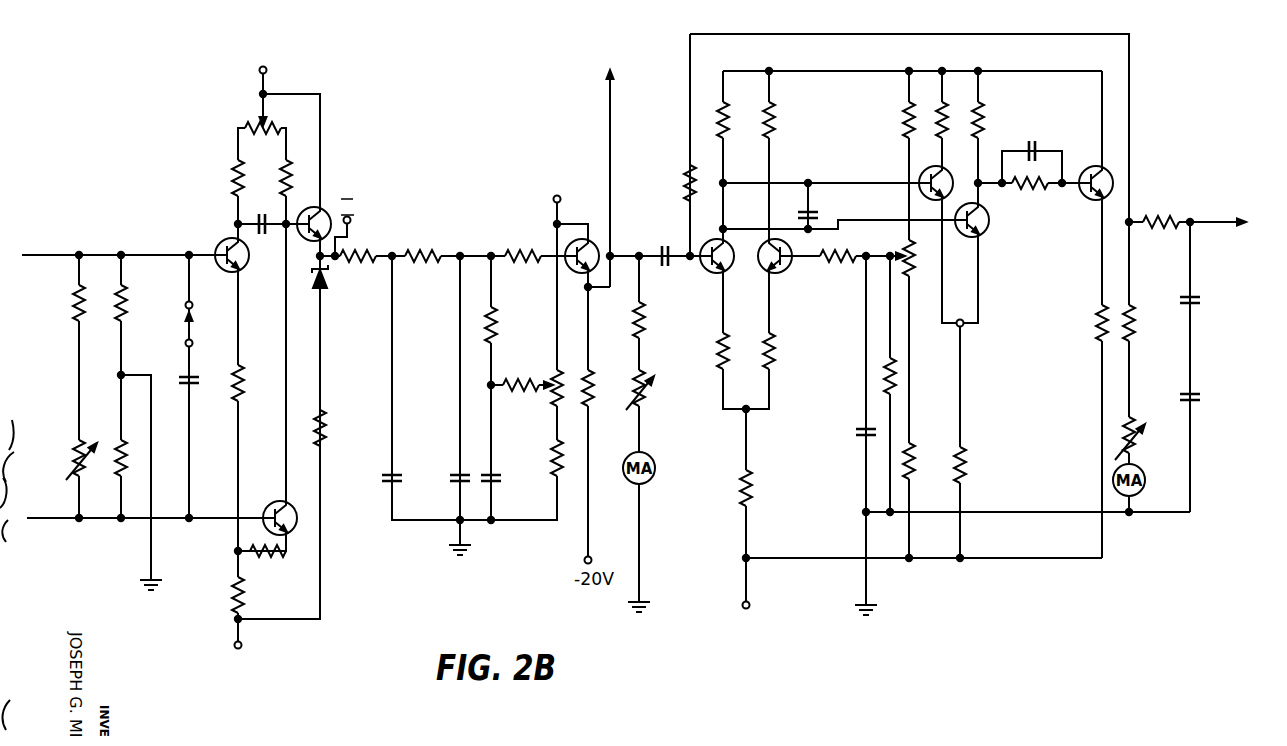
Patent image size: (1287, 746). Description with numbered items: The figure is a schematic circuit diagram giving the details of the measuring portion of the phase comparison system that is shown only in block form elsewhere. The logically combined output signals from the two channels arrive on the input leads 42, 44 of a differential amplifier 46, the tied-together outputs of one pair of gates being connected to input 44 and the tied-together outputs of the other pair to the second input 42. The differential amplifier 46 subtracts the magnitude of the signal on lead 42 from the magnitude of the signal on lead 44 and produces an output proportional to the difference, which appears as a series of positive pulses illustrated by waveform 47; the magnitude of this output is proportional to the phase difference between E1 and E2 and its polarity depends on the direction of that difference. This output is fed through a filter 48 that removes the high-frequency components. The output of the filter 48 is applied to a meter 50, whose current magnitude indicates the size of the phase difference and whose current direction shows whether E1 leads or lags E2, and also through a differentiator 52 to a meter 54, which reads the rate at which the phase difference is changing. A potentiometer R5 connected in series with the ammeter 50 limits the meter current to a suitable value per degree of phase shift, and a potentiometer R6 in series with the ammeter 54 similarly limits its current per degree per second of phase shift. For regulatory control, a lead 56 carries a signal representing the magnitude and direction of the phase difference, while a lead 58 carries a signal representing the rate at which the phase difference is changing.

The second input lead 42 is at (31, 257).
The input lead 44 is at (64, 506).
The differential amplifier 46 is at (207, 531).
The waveform 47 is at (345, 259).
The filter 48 is at (428, 529).
The meter 50 is at (655, 476).
The differentiator 52 is at (939, 570).
The meter 54 is at (1146, 487).
The lead 56 is at (607, 150).
The lead 58 is at (1214, 222).
The potentiometer R5 is at (648, 398).
The potentiometer R6 is at (1138, 442).